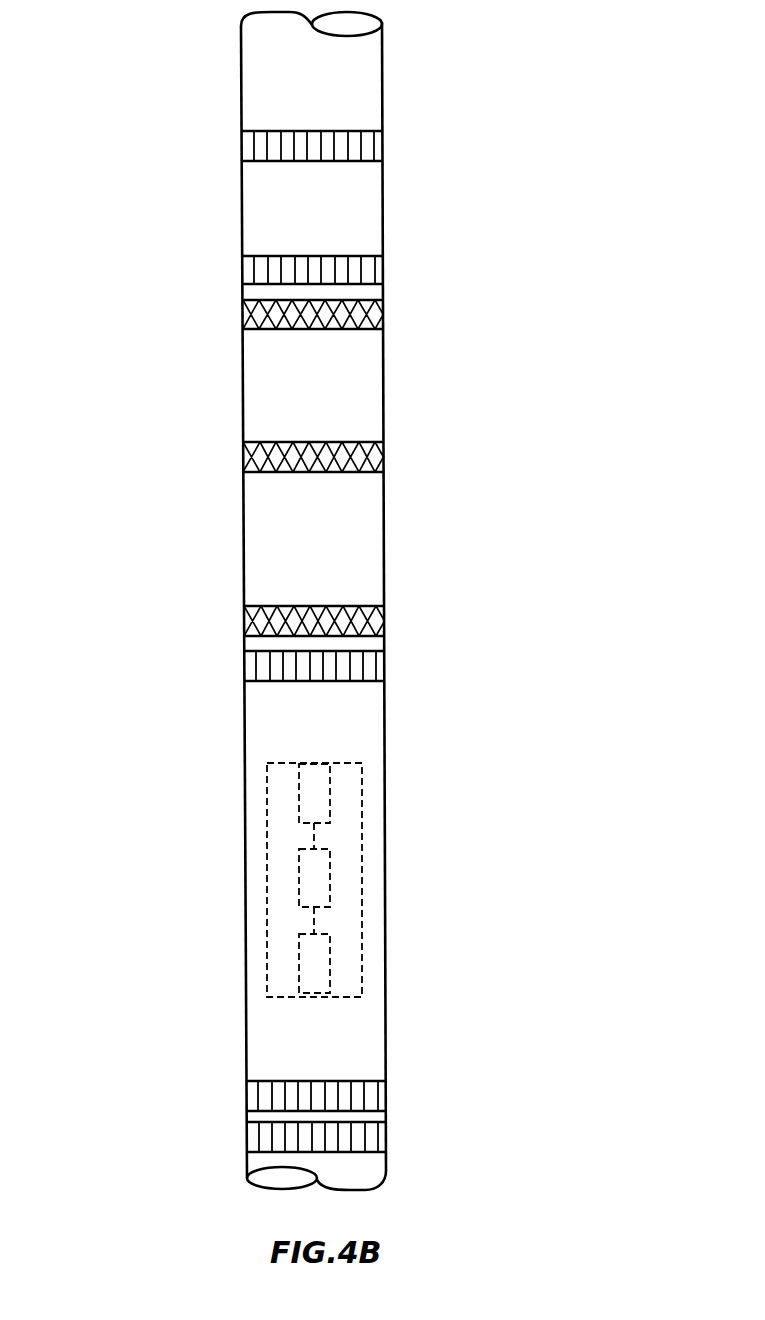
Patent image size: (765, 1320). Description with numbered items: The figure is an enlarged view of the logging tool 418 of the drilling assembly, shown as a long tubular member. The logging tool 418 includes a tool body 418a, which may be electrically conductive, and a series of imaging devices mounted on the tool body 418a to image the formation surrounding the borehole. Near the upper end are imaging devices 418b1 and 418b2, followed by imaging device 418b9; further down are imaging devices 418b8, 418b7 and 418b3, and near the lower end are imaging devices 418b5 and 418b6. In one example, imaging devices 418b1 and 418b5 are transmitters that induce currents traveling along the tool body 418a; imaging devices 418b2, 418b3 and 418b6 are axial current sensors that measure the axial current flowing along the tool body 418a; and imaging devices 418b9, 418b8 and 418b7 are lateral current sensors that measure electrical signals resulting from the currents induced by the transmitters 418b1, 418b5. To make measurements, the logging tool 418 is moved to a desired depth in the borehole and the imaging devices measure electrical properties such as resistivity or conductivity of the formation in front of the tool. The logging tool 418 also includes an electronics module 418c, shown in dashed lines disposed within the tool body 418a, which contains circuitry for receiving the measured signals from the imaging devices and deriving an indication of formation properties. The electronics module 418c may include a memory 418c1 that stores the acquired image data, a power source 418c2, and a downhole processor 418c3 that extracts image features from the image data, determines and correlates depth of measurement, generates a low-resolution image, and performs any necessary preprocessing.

The logging tool 418 is at (383, 90).
The tool body 418a is at (383, 389).
The imaging device (transmitter) 418b1 is at (241, 146).
The imaging device (axial current sensor) 418b2 is at (242, 272).
The imaging device (axial current sensor) 418b3 is at (244, 665).
The imaging device (transmitter) 418b5 is at (246, 1095).
The imaging device (axial current sensor) 418b6 is at (246, 1137).
The imaging device (lateral current sensor) 418b7 is at (244, 620).
The imaging device (lateral current sensor) 418b8 is at (243, 458).
The imaging device (lateral current sensor) 418b9 is at (242, 313).
The electronics module 418c is at (267, 847).
The memory 418c1 is at (330, 797).
The power source 418c2 is at (330, 870).
The downhole processor 418c3 is at (330, 950).